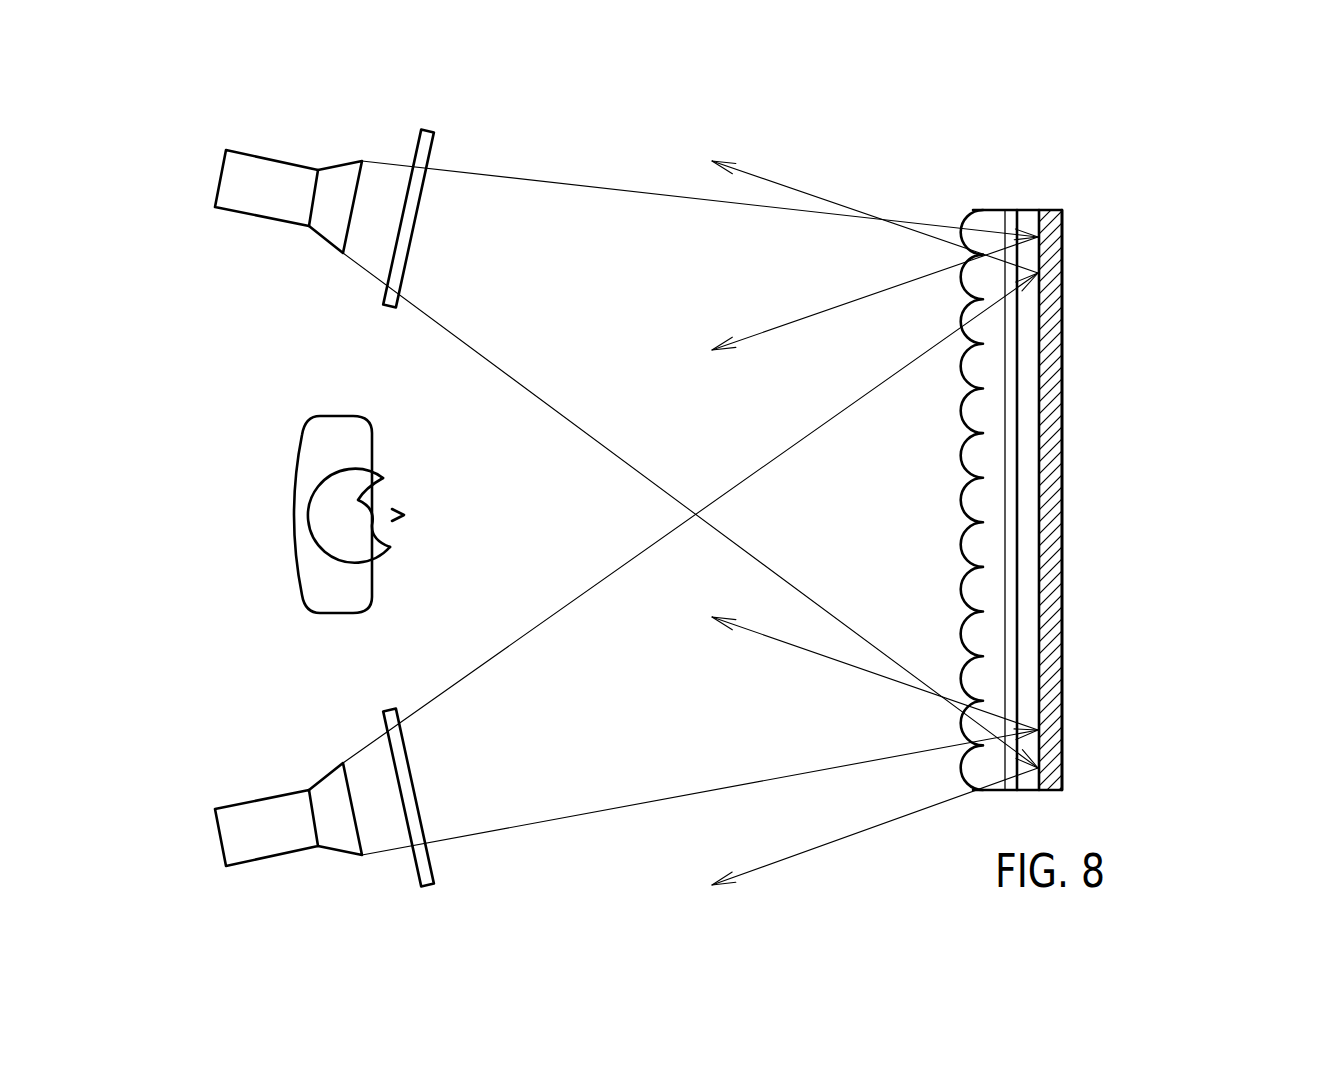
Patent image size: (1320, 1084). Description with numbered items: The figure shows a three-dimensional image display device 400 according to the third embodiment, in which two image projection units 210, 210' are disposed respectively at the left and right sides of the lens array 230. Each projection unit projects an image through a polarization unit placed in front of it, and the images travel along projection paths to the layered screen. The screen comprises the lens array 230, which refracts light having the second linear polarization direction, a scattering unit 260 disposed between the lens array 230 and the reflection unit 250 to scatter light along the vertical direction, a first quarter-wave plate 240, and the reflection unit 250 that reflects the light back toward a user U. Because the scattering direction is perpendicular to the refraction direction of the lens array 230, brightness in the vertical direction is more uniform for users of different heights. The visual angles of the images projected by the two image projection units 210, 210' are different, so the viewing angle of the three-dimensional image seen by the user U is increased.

The image projection unit 210 is at (262, 180).
The image projection unit 210' is at (262, 840).
The lens array 230 is at (982, 217).
The first quarter-wave plate 240 is at (1032, 217).
The reflection unit 250 is at (1055, 217).
The scattering unit 260 is at (1010, 217).
The 3D image display device 400 is at (1142, 210).
The user U is at (310, 516).